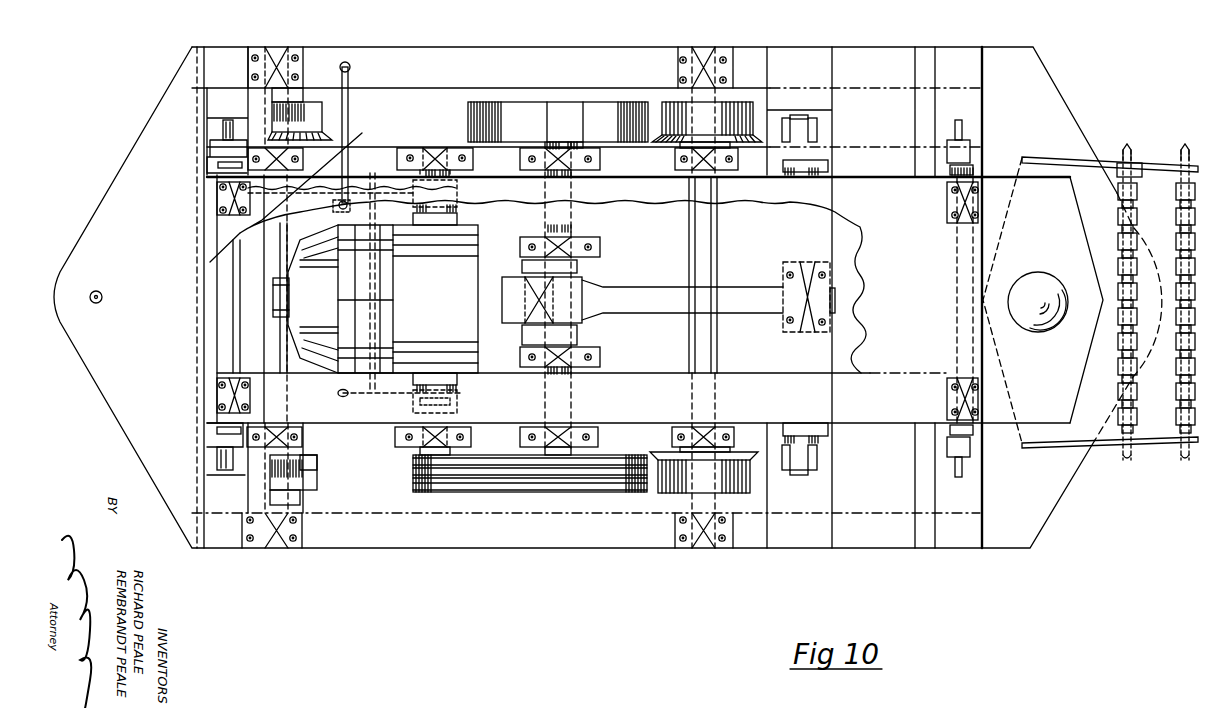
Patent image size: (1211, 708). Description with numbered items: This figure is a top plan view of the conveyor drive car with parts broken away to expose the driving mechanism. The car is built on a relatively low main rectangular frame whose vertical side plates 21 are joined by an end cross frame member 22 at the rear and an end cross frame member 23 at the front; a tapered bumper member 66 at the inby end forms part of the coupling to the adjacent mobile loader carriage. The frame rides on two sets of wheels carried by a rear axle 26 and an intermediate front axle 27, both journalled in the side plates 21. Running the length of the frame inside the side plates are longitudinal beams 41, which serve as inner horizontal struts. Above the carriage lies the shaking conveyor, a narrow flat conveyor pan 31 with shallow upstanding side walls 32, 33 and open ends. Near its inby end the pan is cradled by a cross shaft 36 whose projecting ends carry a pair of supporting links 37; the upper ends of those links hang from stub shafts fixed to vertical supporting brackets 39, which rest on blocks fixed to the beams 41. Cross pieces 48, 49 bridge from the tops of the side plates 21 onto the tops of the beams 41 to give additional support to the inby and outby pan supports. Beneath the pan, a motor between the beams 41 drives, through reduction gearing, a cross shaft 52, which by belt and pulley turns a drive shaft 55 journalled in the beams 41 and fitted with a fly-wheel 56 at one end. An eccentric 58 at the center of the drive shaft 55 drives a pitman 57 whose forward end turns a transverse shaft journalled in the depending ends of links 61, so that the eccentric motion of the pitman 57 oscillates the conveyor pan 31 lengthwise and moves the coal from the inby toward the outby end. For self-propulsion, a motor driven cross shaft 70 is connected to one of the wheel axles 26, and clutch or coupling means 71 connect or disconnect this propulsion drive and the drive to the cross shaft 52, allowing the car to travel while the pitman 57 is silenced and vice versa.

The vertical side plates 21 is at (533, 63).
The rear end cross frame member 22 is at (207, 95).
The front end cross frame member 23 is at (982, 82).
The rear axle 26 is at (332, 160).
The intermediate front axle 27 is at (737, 100).
The conveyor pan 31 is at (1050, 403).
The upstanding side wall 32 is at (330, 447).
The upstanding side wall 33 is at (378, 177).
The cross shaft 36 is at (230, 328).
The supporting links 37 is at (208, 428).
The vertical supporting brackets 39 is at (220, 143).
The longitudinal beams 41 is at (413, 177).
The cross piece 48 is at (250, 493).
The cross piece 49 is at (923, 60).
The cross shaft 52 is at (405, 480).
The drive shaft 55 is at (600, 370).
The fly-wheel 56 is at (560, 115).
The pitman 57 is at (722, 297).
The eccentric 58 is at (555, 270).
The links 61 is at (823, 167).
The tapered bumper member 66 is at (102, 213).
The motor driven cross shaft 70 is at (478, 225).
The clutch or coupling means 71 is at (458, 190).